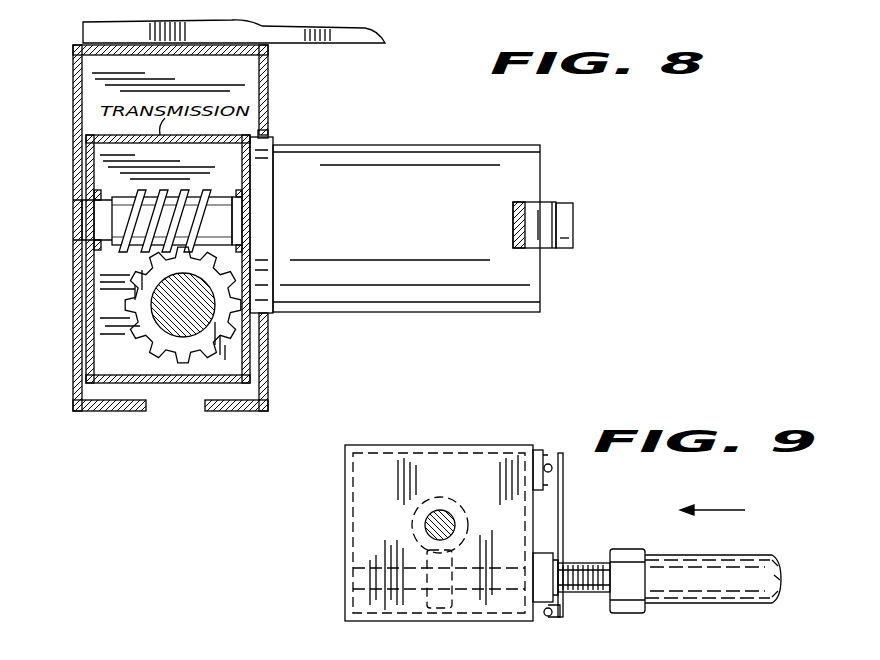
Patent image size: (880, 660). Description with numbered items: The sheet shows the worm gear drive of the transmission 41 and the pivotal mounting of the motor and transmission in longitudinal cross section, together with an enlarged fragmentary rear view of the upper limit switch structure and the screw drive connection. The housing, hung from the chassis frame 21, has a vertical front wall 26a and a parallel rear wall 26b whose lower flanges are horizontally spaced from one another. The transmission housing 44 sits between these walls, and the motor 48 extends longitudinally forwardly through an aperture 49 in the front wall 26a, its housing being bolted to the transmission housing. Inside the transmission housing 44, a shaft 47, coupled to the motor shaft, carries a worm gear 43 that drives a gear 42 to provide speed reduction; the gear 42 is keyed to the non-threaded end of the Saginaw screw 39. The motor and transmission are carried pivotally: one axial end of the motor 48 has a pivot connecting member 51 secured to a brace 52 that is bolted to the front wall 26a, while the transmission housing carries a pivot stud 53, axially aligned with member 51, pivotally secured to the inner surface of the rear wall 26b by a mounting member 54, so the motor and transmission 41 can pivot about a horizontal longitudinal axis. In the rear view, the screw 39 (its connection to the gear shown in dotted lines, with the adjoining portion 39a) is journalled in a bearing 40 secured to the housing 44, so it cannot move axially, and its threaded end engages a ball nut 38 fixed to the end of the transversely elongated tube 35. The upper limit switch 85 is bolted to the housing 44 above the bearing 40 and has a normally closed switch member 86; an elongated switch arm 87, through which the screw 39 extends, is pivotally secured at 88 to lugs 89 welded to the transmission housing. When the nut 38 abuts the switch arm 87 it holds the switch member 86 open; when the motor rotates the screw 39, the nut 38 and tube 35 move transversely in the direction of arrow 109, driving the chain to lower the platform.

In FIG. 8, the chassis frame 21 is at (335, 45).
In FIG. 8, the front wall 26a is at (268, 82).
In FIG. 8, the rear wall 26b is at (73, 88).
In FIG. 8, the aperture 49 is at (268, 132).
In FIG. 8, the motor 48 is at (360, 156).
In FIG. 8, the brace 52 is at (535, 208).
In FIG. 8, the pivot connecting member 51 is at (573, 207).
In FIG. 8, the mounting member 54 is at (86, 178).
In FIG. 8, the pivot stud 53 is at (73, 218).
In FIG. 9, the pivot stud 53 is at (426, 522).
In FIG. 8, the worm gear 43 is at (193, 205).
In FIG. 9, the worm gear 43 is at (437, 497).
In FIG. 8, the shaft 47 is at (226, 213).
In FIG. 8, the gear 42 is at (138, 299).
In FIG. 9, the gear 42 is at (425, 592).
In FIG. 8, the Saginaw screw 39 is at (197, 330).
In FIG. 9, the Saginaw screw 39 is at (578, 565).
In FIG. 8, the transmission housing 44 is at (86, 370).
In FIG. 8, the transmission 41 is at (218, 386).
In FIG. 9, the shaft portion 39a is at (365, 595).
In FIG. 9, the upper limit switch 85 is at (543, 453).
In FIG. 9, the switch member 86 is at (549, 464).
In FIG. 9, the switch arm 87 is at (563, 473).
In FIG. 9, the bearing 40 is at (545, 553).
In FIG. 9, the ball nut 38 is at (626, 555).
In FIG. 9, the tube 35 is at (692, 572).
In FIG. 9, the pivot 88 is at (556, 614).
In FIG. 9, the lugs 89 is at (546, 618).
In FIG. 9, the arrow 109 is at (725, 478).